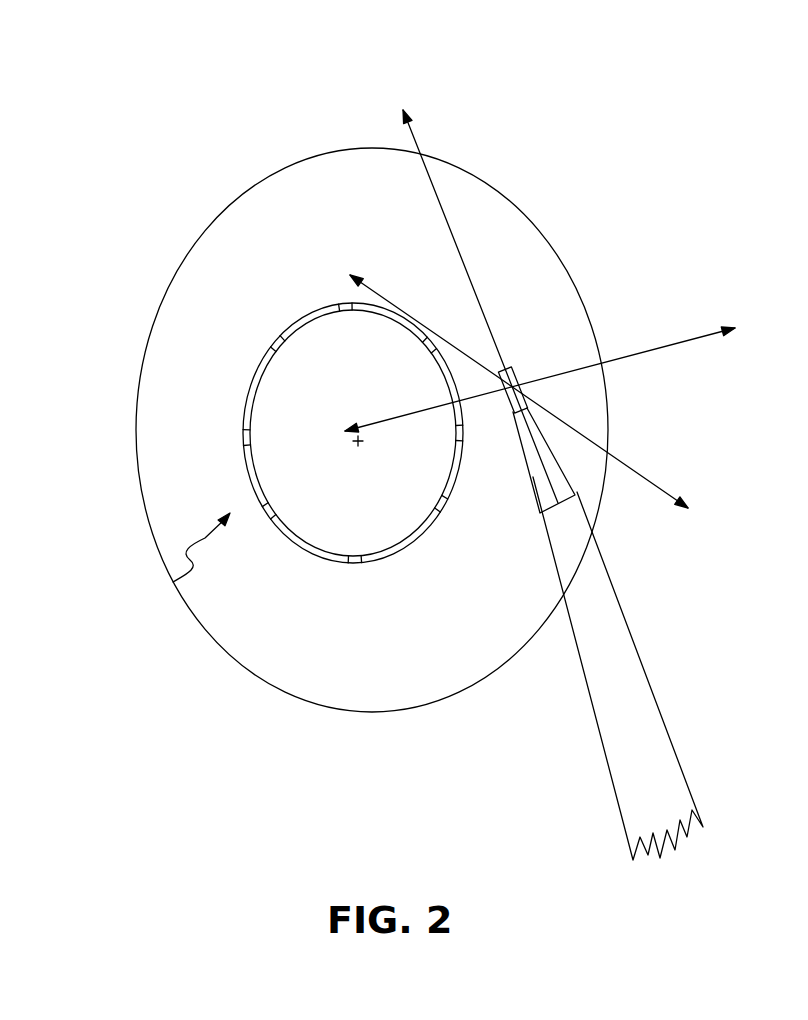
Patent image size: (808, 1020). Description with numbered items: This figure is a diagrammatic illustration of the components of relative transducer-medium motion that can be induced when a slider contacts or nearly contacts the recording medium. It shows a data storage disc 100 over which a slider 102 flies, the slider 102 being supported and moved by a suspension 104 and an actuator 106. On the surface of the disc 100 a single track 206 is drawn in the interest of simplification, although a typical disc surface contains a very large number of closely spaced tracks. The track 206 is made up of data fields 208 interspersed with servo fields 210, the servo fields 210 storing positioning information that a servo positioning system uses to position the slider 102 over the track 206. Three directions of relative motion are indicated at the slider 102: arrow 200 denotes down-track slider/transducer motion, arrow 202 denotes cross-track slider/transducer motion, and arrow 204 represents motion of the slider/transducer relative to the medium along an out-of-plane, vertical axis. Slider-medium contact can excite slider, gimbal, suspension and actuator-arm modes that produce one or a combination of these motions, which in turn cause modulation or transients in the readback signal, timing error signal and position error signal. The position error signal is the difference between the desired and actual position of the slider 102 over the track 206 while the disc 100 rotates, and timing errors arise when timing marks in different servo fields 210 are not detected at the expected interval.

The data storage disc 100 is at (163, 312).
The slider 102 is at (538, 366).
The suspension 104 is at (534, 478).
The actuator 106 is at (645, 703).
The down-track slider/transducer motion 200 is at (415, 133).
The cross-track slider/transducer motion 202 is at (678, 342).
The out-of-plane slider/transducer motion 204 is at (650, 480).
The track 206 is at (173, 582).
The data fields 208 is at (247, 396).
The servo fields 210 is at (245, 434).